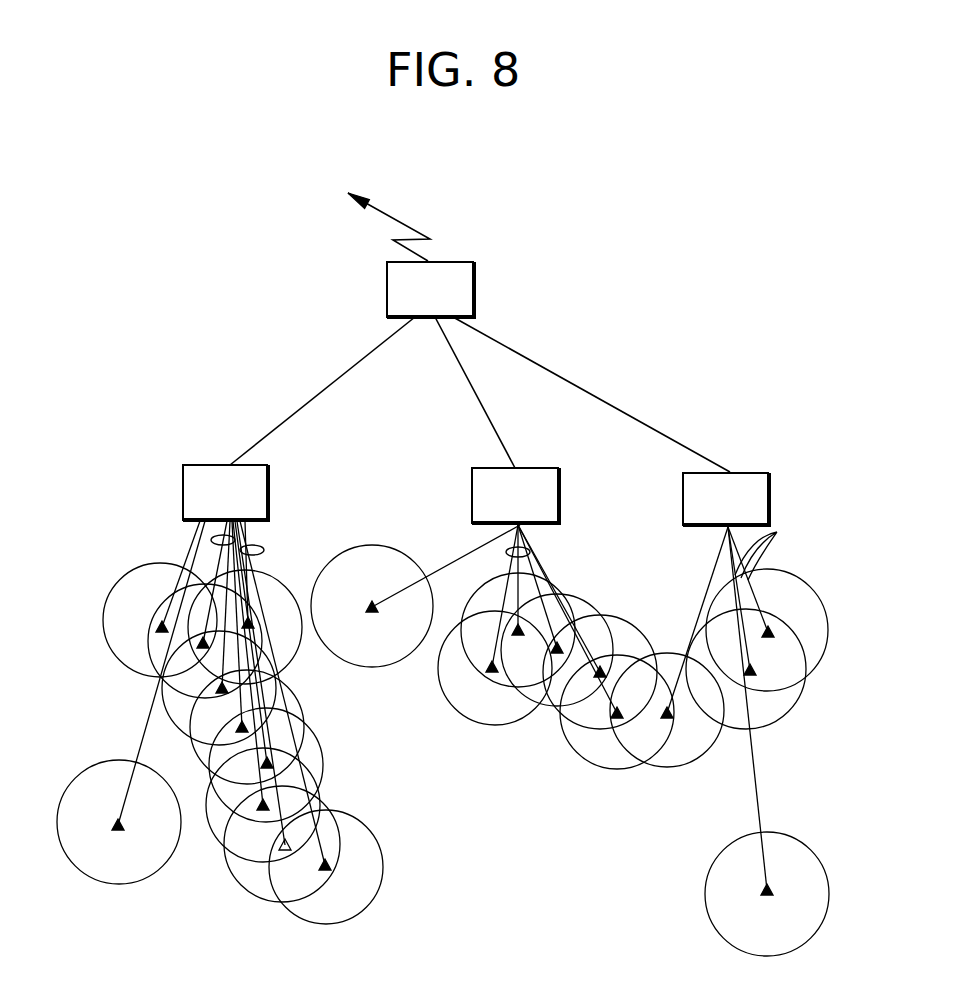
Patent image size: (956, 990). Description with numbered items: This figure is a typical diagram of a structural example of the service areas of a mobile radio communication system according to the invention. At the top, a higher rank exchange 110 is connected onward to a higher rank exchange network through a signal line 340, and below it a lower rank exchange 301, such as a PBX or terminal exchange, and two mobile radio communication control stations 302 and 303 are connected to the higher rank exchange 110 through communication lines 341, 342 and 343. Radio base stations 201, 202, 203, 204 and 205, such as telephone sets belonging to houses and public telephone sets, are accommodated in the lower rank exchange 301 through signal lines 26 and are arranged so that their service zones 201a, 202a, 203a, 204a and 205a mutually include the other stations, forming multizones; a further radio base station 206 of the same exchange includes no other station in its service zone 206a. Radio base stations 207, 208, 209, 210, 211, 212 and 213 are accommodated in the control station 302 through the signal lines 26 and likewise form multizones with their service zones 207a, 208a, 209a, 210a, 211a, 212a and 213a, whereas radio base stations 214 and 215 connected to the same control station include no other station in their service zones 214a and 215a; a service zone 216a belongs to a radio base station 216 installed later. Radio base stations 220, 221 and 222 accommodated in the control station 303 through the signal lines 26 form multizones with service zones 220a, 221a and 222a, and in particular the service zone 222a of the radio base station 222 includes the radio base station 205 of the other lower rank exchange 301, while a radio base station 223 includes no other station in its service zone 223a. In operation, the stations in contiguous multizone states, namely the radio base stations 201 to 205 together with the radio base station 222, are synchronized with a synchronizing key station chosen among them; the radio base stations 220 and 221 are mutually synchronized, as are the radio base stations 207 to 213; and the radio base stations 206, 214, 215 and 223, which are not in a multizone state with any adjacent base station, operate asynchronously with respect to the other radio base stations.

The higher rank exchange 110 is at (473, 297).
The signal line 340 is at (407, 222).
The communication line 341 is at (490, 412).
The communication line 342 is at (308, 400).
The communication line 343 is at (635, 417).
The lower rank exchange 301 is at (558, 495).
The mobile radio communication control station 302 is at (270, 490).
The mobile radio communication control station 303 is at (768, 500).
The signal lines 26 is at (211, 540).
The radio base station 201 is at (475, 668).
The service zone 201a is at (465, 600).
The radio base station 202 is at (467, 716).
The service zone 202a is at (492, 725).
The radio base station 203 is at (598, 660).
The service zone 203a is at (577, 594).
The radio base station 204 is at (567, 719).
The service zone 204a is at (588, 735).
The radio base station 205 is at (588, 762).
The service zone 205a is at (612, 769).
The radio base station 206 is at (372, 612).
The service zone 206a is at (372, 546).
The radio base station 207 is at (160, 625).
The service zone 207a is at (142, 570).
The radio base station 208 is at (148, 641).
The service zone 208a is at (156, 669).
The radio base station 209 is at (282, 671).
The service zone 209a is at (250, 572).
The radio base station 210 is at (163, 693).
The service zone 210a is at (175, 725).
The radio base station 211 is at (304, 730).
The service zone 211a is at (300, 700).
The radio base station 212 is at (212, 772).
The service zone 212a is at (323, 765).
The radio base station 213 is at (262, 812).
The service zone 213a is at (320, 800).
The radio base station 214 is at (330, 866).
The service zone 214a is at (382, 850).
The radio base station 215 is at (115, 828).
The service zone 215a is at (137, 883).
The radio base station 216 is at (283, 850).
The service zone 216a is at (262, 902).
The radio base station 220 is at (770, 628).
The service zone 220a is at (718, 590).
The radio base station 221 is at (776, 721).
The service zone 221a is at (763, 729).
The radio base station 222 is at (655, 767).
The service zone 222a is at (682, 768).
The radio base station 223 is at (765, 892).
The service zone 223a is at (736, 948).